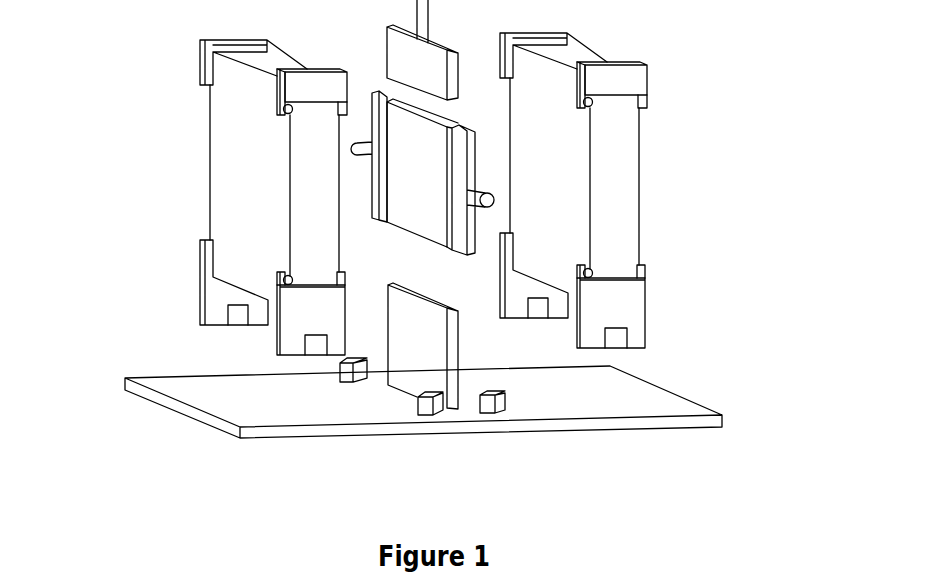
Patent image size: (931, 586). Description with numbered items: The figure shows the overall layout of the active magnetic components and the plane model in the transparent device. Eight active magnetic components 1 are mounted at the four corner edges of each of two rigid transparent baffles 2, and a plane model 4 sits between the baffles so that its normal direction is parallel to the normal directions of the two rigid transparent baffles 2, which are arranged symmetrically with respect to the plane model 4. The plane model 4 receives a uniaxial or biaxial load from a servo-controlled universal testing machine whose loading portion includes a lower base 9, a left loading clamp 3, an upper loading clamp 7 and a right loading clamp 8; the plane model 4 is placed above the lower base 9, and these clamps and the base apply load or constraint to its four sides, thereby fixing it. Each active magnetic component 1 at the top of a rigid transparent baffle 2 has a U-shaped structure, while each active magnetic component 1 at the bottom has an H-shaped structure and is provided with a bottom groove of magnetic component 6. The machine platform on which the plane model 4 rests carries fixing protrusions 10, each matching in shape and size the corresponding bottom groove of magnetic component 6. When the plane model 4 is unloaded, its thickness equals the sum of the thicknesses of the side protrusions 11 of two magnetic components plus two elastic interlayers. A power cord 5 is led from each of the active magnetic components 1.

The active magnetic component 1 is at (191, 58).
The rigid transparent baffle 2 is at (233, 120).
The left loading clamp 3 is at (366, 131).
The plane model 4 is at (415, 191).
The power cord 5 is at (268, 289).
The bottom groove of magnetic component 6 is at (298, 349).
The upper loading clamp 7 is at (448, 95).
The right loading clamp 8 is at (481, 145).
The lower base 9 is at (438, 345).
The fixing protrusion 10 is at (505, 409).
The side protrusion 11 is at (600, 277).